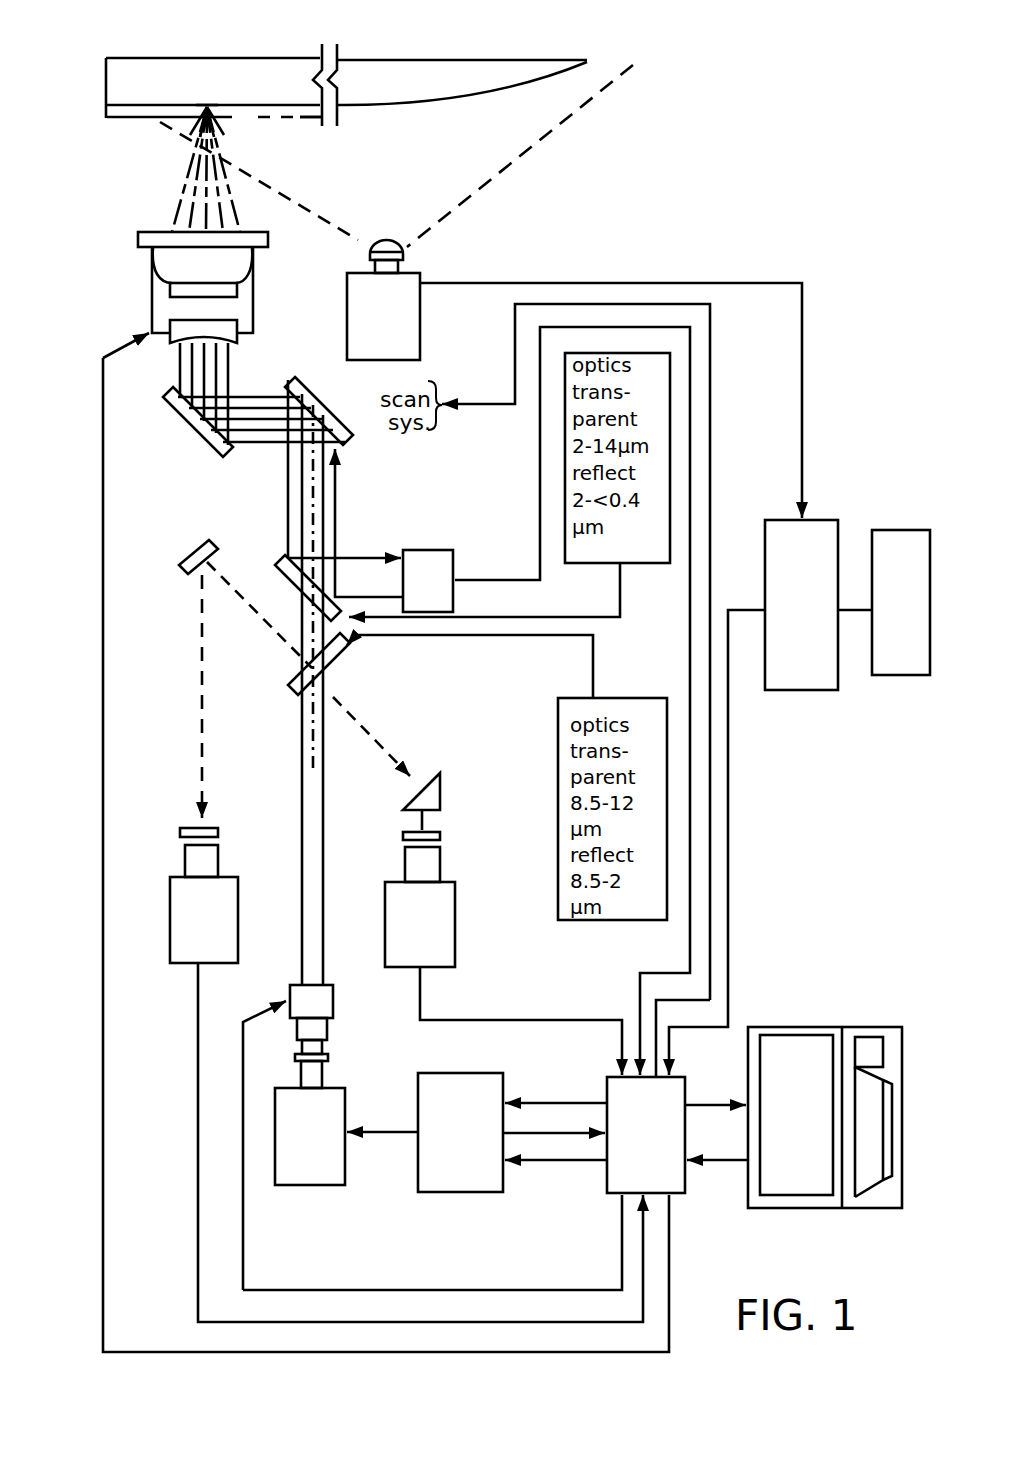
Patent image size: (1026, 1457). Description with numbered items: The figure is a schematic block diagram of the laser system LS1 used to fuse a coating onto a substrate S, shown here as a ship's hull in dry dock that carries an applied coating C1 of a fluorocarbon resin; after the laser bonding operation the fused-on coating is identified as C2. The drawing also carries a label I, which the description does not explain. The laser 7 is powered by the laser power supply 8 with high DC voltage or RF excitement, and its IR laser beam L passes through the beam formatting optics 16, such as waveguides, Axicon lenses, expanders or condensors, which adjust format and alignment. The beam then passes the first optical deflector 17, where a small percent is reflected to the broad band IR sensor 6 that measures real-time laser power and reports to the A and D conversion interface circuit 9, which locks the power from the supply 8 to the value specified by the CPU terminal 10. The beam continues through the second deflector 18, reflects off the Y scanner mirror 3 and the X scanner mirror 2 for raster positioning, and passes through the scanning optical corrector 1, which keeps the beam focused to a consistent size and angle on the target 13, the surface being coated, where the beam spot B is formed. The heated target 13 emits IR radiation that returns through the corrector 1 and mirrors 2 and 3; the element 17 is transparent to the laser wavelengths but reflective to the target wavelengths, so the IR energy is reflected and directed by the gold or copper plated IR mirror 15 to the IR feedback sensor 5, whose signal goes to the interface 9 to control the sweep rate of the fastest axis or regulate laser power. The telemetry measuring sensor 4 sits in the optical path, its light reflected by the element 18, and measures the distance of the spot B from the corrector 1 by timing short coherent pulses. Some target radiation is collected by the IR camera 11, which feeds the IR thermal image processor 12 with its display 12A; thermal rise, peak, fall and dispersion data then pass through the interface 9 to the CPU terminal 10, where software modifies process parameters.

The incident radiation I is at (164, 101).
The substrate S is at (392, 60).
The fused-on coating C2 is at (120, 107).
The applied coating C1 is at (300, 116).
The target 13 is at (212, 110).
The beam spot B is at (209, 109).
The laser beam L is at (203, 207).
The laser system LS1 is at (546, 234).
The scanning optical corrector 1 is at (137, 238).
The IR camera 11 is at (347, 280).
The X scanner mirror 2 is at (220, 450).
The Y scanner mirror 3 is at (288, 378).
The telemetry measuring sensor 4 is at (432, 549).
The telemetry laser beam combiner optics 18 is at (280, 556).
The thermal view spot laser beam combiner optics 17 is at (291, 690).
The IR mirror 15 is at (186, 563).
The IR feedback sensor 5 is at (170, 902).
The broad band IR sensor 6 is at (455, 903).
The beam formatting optics 16 is at (333, 1003).
The laser 7 is at (312, 1187).
The laser power supply 8 is at (438, 1193).
The A and D conversion interface circuit 9 is at (602, 1178).
The CPU terminal 10 is at (818, 1026).
The IR thermal image processor 12 is at (778, 691).
The display 12A is at (895, 673).